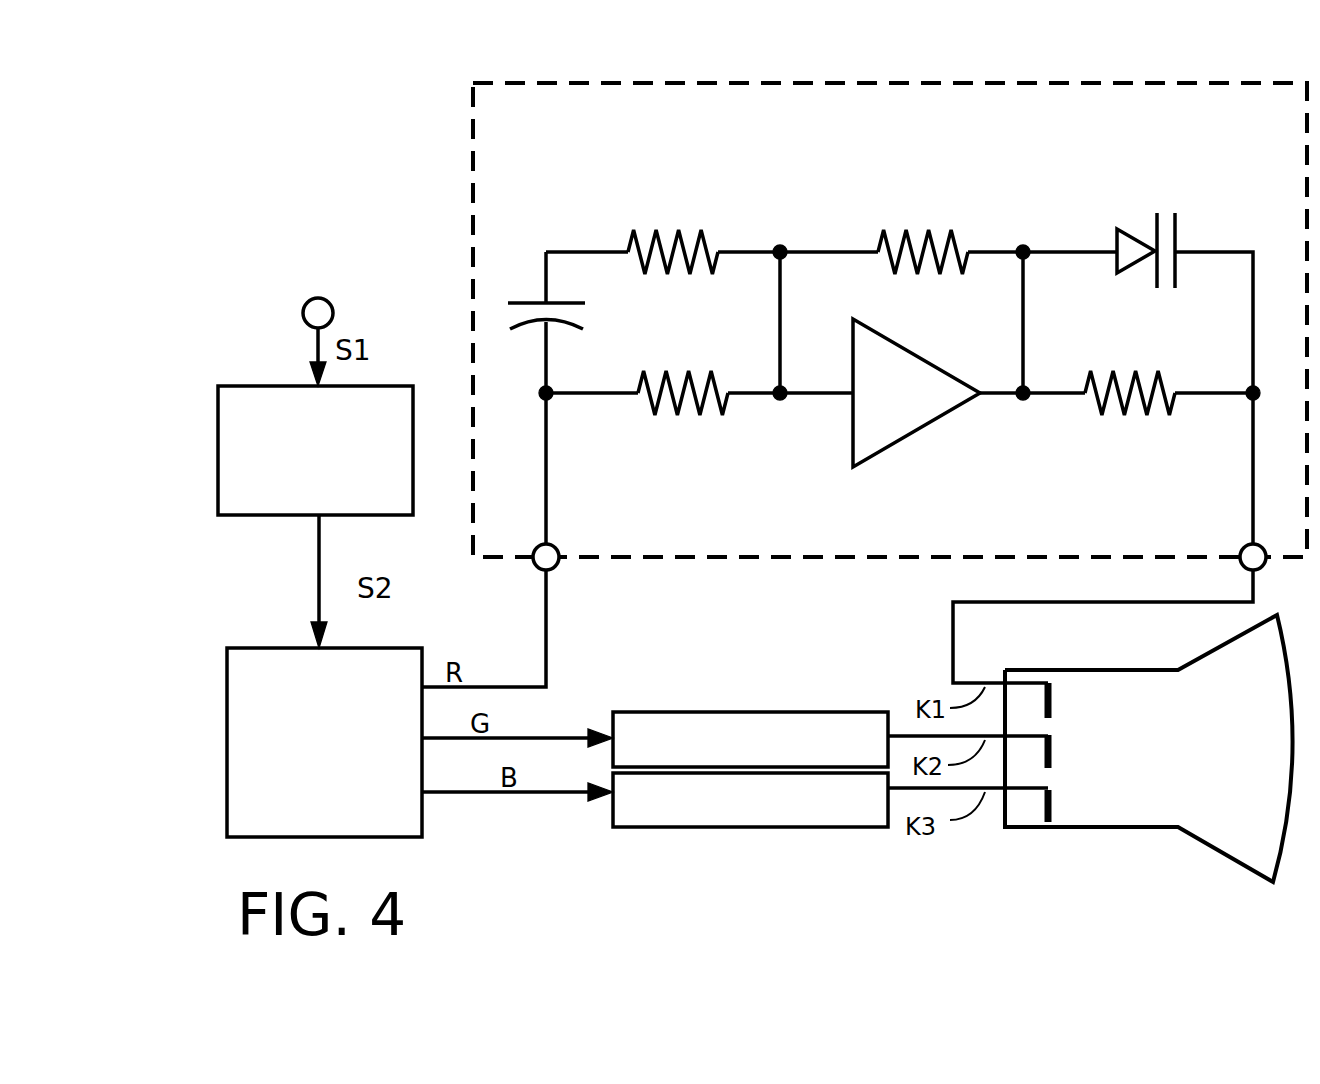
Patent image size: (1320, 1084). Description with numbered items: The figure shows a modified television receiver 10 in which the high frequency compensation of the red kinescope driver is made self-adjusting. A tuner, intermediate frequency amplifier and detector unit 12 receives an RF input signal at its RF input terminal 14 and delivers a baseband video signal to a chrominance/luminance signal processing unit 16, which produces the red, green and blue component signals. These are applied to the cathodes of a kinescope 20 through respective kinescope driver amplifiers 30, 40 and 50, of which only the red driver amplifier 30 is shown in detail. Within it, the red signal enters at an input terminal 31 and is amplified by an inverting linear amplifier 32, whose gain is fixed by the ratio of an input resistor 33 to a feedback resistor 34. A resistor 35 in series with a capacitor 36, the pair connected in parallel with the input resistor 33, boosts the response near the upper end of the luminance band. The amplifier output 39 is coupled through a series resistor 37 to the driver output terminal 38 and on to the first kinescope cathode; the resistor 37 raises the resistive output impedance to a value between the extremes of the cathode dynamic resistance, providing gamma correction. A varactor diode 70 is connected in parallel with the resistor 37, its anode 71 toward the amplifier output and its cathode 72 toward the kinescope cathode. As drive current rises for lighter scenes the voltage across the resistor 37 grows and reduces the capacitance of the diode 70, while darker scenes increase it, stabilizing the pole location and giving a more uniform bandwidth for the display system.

The television receiver 10 is at (298, 154).
The tuner, intermediate frequency amplifier and detector unit 12 is at (280, 384).
The RF input terminal 14 is at (307, 298).
The chrominance/luminance signal processing unit 16 is at (300, 646).
The kinescope 20 is at (1148, 832).
The kinescope driver amplifier 30 is at (853, 562).
The input terminal 31 is at (554, 543).
The linear amplifier 32 is at (917, 440).
The input resistor 33 is at (682, 422).
The feedback resistor 34 is at (903, 226).
The resistor 35 is at (663, 226).
The capacitor 36 is at (566, 322).
The resistor 37 is at (1120, 368).
The output terminal 38 is at (1244, 546).
The output 39 is at (977, 380).
The kinescope driver amplifier 40 is at (720, 708).
The kinescope driver amplifier 50 is at (723, 835).
The diode 70 is at (1155, 202).
The anode 71 is at (1108, 237).
The cathode 72 is at (1197, 232).